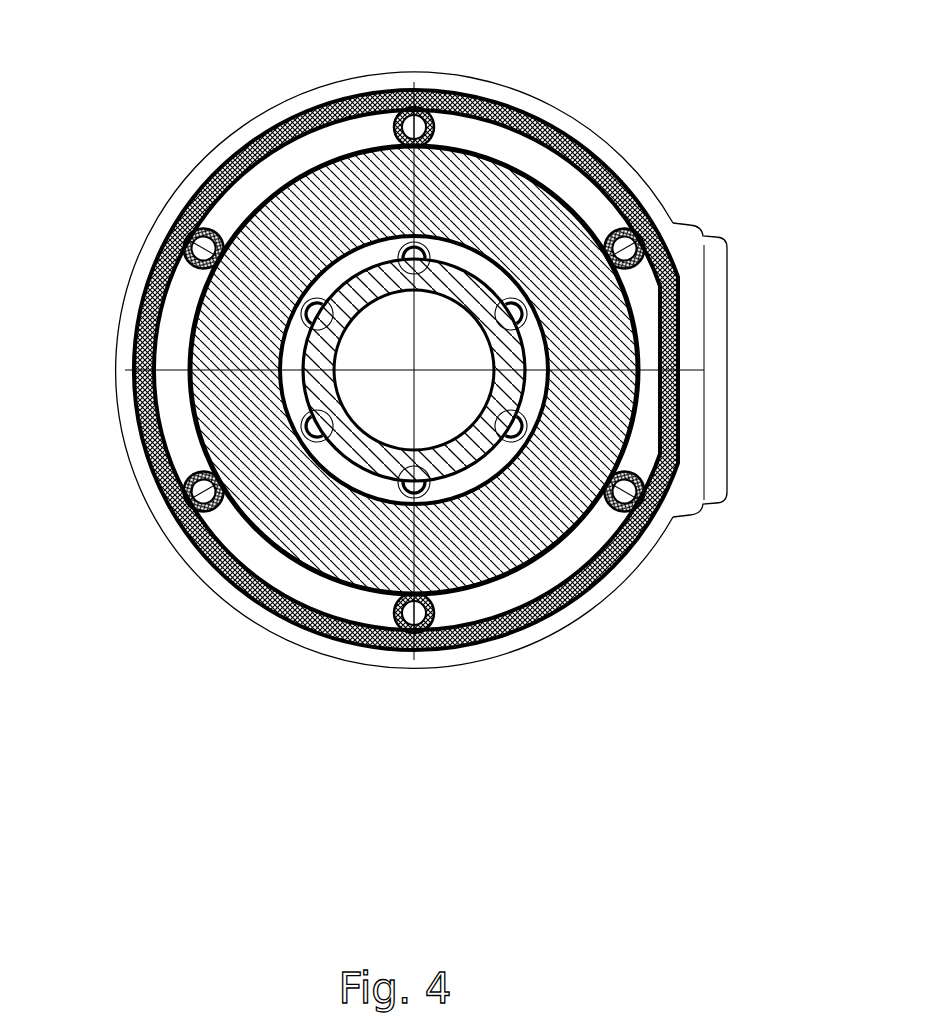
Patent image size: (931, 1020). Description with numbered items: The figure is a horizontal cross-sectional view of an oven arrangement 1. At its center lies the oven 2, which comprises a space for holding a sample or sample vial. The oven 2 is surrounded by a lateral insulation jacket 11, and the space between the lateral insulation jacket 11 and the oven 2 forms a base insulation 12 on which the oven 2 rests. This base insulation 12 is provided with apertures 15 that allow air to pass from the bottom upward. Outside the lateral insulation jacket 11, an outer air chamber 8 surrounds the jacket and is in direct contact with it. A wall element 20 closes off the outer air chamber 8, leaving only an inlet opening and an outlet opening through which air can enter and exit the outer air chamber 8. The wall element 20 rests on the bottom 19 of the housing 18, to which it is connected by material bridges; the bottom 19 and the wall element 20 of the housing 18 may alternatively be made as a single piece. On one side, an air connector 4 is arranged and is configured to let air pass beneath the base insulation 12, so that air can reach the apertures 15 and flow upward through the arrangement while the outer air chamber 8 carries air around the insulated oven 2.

The oven arrangement 1 is at (104, 141).
The oven 2 is at (460, 453).
The air connector 4 is at (695, 260).
The outer air chamber 8 is at (580, 188).
The lateral insulation jacket 11 is at (457, 192).
The base insulation 12 is at (527, 417).
The apertures 15 is at (330, 450).
The housing 18 is at (208, 182).
The bottom 19 is at (325, 89).
The wall element 20 is at (247, 153).